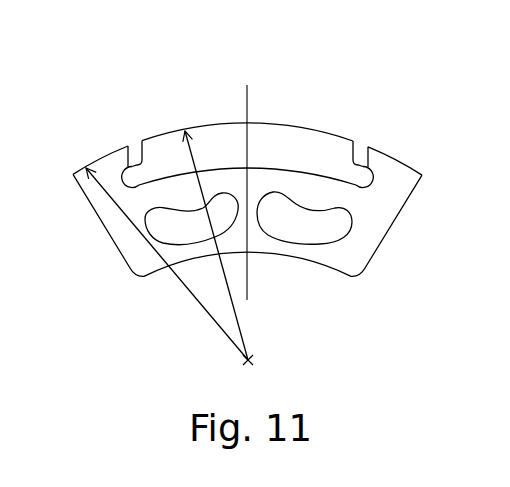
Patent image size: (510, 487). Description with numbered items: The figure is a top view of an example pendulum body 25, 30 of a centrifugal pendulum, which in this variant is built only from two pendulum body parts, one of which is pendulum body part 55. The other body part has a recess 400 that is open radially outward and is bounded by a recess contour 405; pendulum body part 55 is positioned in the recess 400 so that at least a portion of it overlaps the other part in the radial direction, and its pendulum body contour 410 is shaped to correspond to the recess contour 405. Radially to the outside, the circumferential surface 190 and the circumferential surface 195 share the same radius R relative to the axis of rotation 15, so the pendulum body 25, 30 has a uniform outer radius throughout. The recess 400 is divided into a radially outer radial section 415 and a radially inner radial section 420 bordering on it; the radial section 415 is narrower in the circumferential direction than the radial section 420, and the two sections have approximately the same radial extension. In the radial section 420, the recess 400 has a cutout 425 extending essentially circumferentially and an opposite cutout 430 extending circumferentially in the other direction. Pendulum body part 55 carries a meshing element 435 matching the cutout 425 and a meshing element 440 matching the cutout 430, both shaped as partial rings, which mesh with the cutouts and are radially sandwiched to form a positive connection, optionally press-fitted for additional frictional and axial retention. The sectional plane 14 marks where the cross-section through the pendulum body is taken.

The sectional plane 14 is at (251, 93).
The axis of rotation 15 is at (254, 358).
The pendulum body 25 is at (315, 84).
The pendulum body 30 is at (261, 146).
The pendulum body part 55 is at (318, 150).
The circumferential surface 190 is at (405, 154).
The circumferential surface 195 is at (162, 131).
The recess 400 is at (369, 145).
The recess contour 405 is at (221, 164).
The pendulum body contour 410 is at (351, 192).
The radial section 415 is at (126, 155).
The radial section 420 is at (123, 173).
The cutout 425 is at (134, 188).
The cutout 430 is at (372, 184).
The meshing element 435 is at (137, 210).
The meshing element 440 is at (378, 168).
The radius R is at (202, 306).